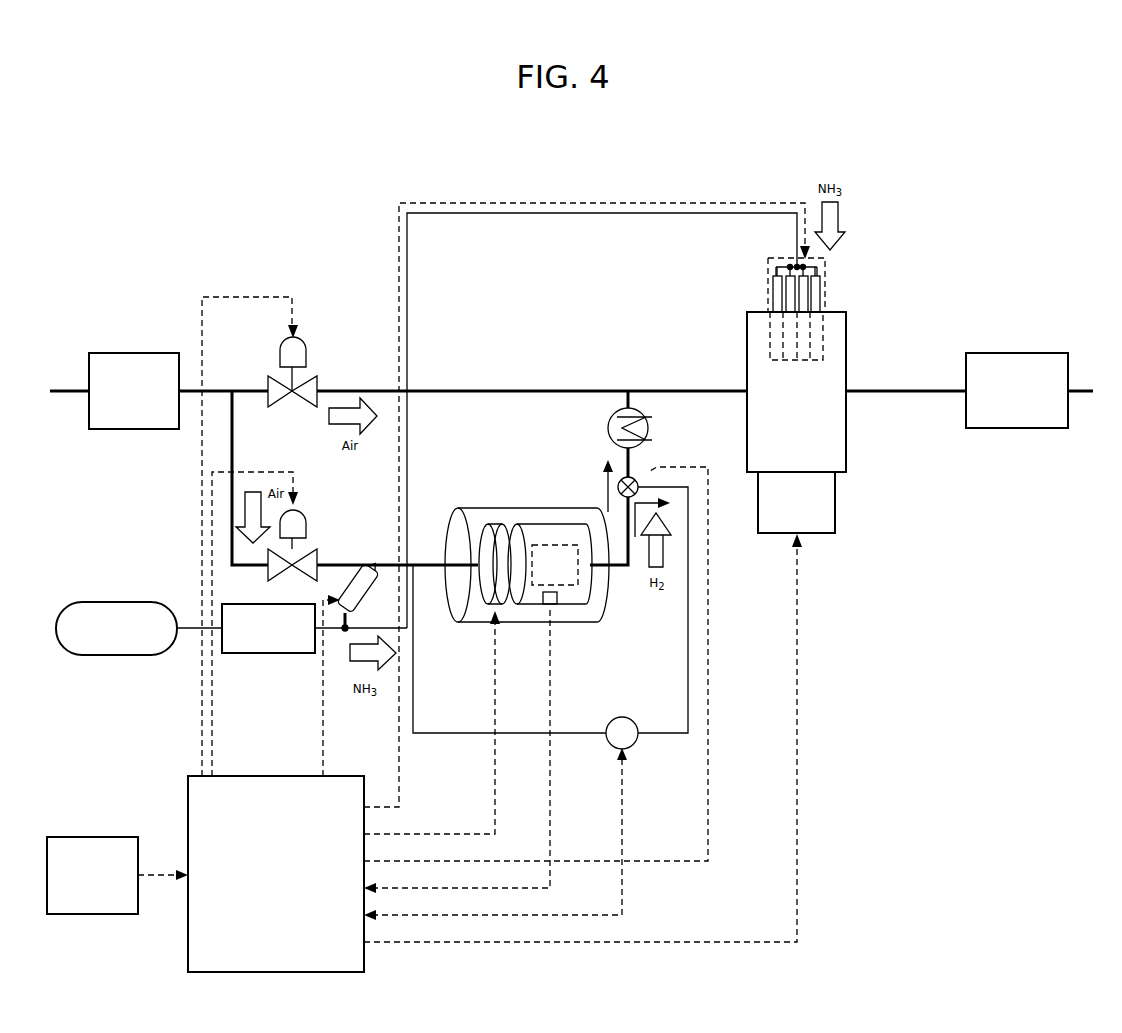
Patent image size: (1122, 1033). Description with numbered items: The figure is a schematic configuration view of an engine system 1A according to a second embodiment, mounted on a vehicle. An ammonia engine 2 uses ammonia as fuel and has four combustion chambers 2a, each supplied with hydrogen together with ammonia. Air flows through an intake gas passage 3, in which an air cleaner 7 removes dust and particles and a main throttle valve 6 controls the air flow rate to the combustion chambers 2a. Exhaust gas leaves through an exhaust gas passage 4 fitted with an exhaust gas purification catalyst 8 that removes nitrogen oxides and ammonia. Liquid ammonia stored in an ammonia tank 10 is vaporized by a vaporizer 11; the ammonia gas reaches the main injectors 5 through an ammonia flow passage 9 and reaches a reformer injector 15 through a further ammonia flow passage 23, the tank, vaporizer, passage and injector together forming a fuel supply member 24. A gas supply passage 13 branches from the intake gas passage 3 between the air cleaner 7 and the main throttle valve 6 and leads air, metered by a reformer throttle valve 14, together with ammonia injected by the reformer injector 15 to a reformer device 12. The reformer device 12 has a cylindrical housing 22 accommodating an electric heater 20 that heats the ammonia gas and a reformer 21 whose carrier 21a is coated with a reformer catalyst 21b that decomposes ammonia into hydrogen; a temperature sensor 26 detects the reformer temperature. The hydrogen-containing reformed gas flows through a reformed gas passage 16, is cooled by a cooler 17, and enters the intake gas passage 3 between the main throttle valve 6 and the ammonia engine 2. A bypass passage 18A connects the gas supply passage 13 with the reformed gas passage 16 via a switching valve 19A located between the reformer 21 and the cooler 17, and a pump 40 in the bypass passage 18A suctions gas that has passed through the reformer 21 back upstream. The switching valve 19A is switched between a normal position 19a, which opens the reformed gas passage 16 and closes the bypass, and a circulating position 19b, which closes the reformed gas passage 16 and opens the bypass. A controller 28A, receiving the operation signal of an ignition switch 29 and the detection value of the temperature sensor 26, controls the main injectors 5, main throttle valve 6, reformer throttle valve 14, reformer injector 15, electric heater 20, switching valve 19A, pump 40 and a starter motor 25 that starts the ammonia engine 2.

The engine system 1A is at (226, 222).
The ammonia engine 2 is at (746, 352).
The combustion chamber 2a is at (775, 325).
The intake gas passage 3 is at (514, 390).
The exhaust gas passage 4 is at (913, 390).
The main injector 5 is at (774, 290).
The main throttle valve 6 is at (306, 350).
The air cleaner 7 is at (137, 352).
The exhaust gas purification catalyst 8 is at (1017, 352).
The ammonia flow passage 9 is at (408, 302).
The ammonia tank 10 is at (118, 601).
The vaporizer 11 is at (244, 654).
The reformer device 12 is at (544, 554).
The gas supply passage 13 is at (362, 567).
The reformer throttle valve 14 is at (305, 510).
The reformer injector 15 is at (363, 600).
The reformed gas passage 16 is at (602, 590).
The cooler 17 is at (607, 423).
The bypass passage 18A is at (664, 735).
The normal position 19a is at (602, 491).
The switching valve 19A is at (642, 475).
The circulating position 19b is at (660, 512).
The electric heater 20 is at (490, 522).
The reformer 21 is at (552, 528).
The carrier 21a is at (600, 592).
The reformer catalyst 21b is at (572, 585).
The housing 22 is at (450, 510).
The ammonia flow passage 23 is at (343, 634).
The fuel supply member 24 is at (300, 670).
The starter motor 25 is at (821, 535).
The temperature sensor 26 is at (540, 606).
The controller 28A is at (188, 784).
The ignition switch 29 is at (70, 836).
The pump 40 is at (634, 719).